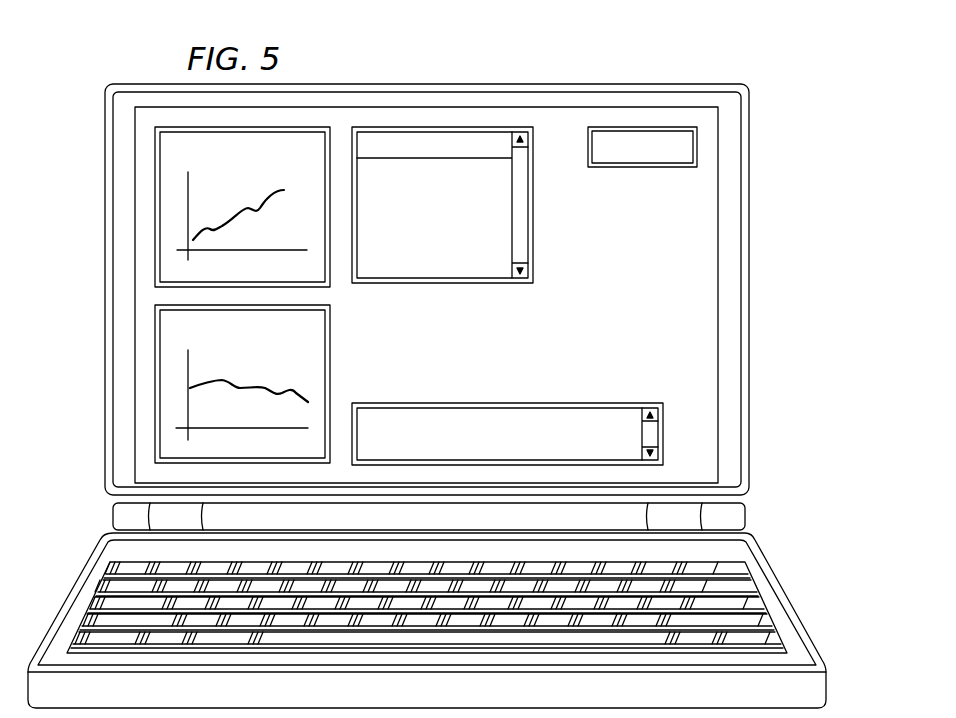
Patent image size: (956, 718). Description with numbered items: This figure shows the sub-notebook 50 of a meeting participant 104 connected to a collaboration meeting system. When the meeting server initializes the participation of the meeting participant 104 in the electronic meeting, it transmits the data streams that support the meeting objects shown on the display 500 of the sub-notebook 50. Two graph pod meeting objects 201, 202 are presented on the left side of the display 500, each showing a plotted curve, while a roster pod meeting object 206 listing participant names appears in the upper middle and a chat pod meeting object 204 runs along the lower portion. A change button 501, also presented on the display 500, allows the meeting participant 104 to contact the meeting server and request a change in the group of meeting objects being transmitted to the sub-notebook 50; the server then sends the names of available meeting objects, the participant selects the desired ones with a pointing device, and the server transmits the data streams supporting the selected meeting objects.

The sub-notebook 50 is at (104, 294).
The meeting participant 104 is at (772, 186).
The display 500 is at (661, 323).
The graph pod meeting object 201 is at (263, 168).
The graph pod meeting object 202 is at (262, 348).
The roster pod meeting object 206 is at (489, 230).
The chat pod meeting object 204 is at (506, 403).
The change button 501 is at (641, 167).